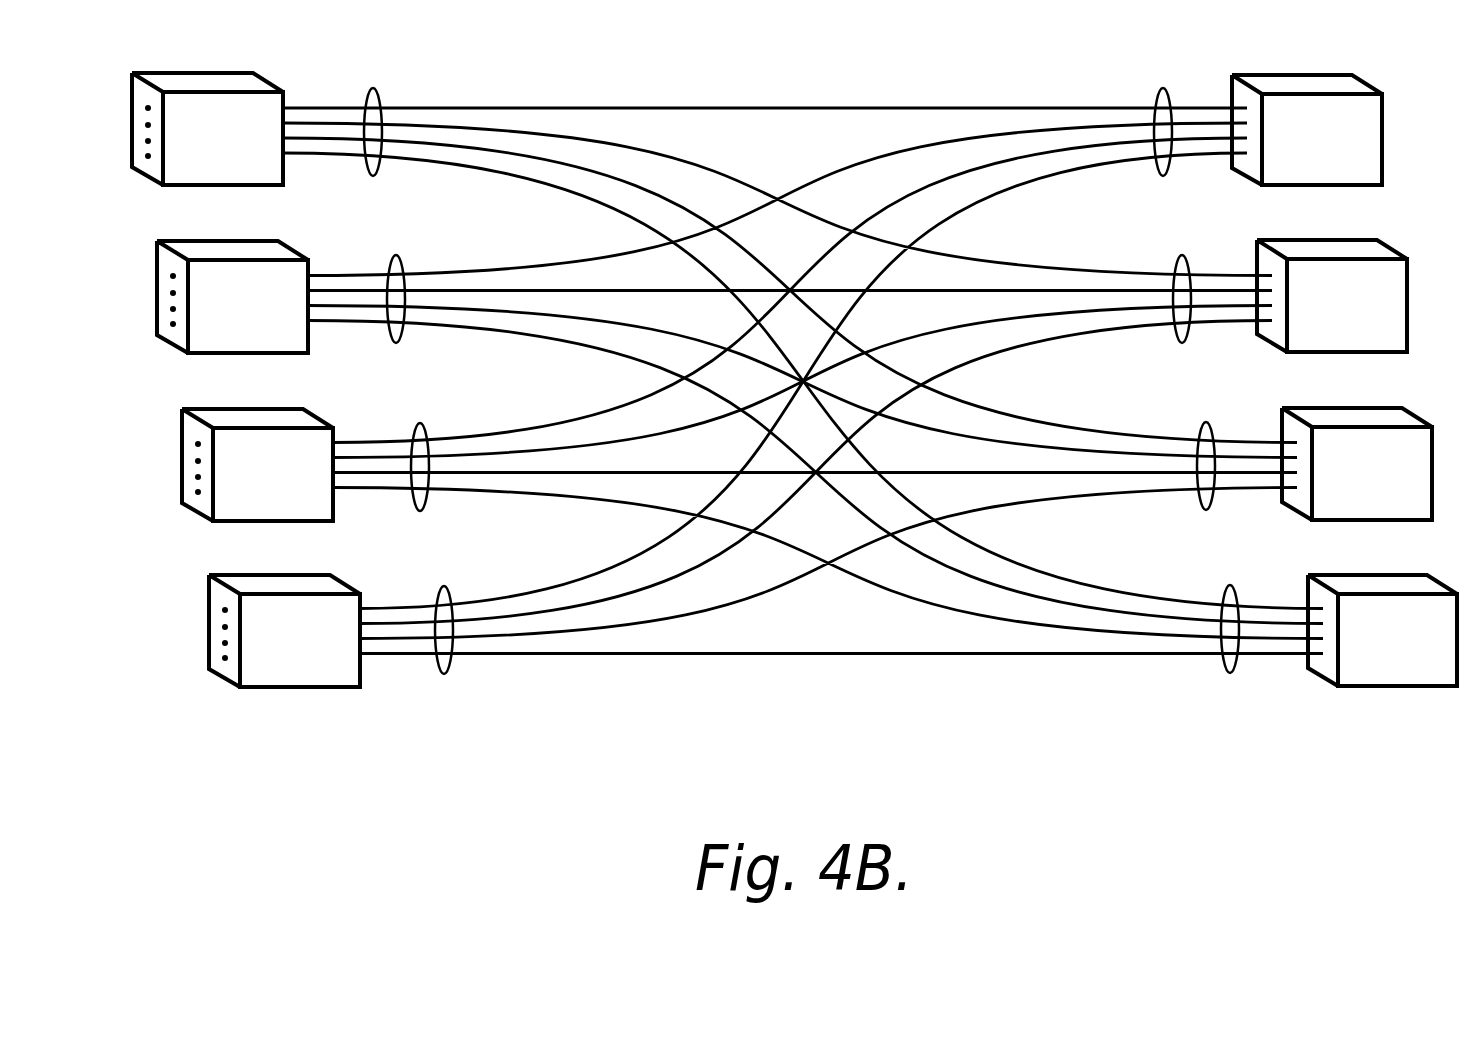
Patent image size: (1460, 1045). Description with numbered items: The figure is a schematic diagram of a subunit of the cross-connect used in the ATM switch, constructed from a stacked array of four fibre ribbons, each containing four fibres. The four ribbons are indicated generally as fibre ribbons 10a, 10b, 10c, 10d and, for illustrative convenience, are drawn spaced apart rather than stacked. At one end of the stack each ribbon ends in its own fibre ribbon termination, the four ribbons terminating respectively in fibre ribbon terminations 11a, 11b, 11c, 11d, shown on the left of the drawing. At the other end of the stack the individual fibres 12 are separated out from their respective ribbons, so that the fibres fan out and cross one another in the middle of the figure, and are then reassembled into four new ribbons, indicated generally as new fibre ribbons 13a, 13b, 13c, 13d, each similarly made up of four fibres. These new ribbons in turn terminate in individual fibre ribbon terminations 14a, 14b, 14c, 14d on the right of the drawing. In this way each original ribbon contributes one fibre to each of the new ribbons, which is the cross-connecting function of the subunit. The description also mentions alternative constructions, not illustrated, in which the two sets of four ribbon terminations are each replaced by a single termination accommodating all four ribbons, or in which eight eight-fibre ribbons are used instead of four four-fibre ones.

The fibre ribbon 10a is at (383, 93).
The fibre ribbon 10b is at (402, 263).
The fibre ribbon 10c is at (425, 432).
The fibre ribbon 10d is at (448, 595).
The fibre ribbon termination 11a is at (248, 152).
The fibre ribbon termination 11b is at (272, 320).
The fibre ribbon termination 11c is at (298, 488).
The fibre ribbon termination 11d is at (326, 654).
The individual fibres 12 is at (920, 335).
The new fibre ribbon 13a is at (1157, 102).
The new fibre ribbon 13b is at (1175, 262).
The new fibre ribbon 13c is at (1198, 430).
The new fibre ribbon 13d is at (1223, 595).
The fibre ribbon termination 14a is at (1347, 155).
The fibre ribbon termination 14b is at (1372, 320).
The fibre ribbon termination 14c is at (1397, 488).
The fibre ribbon termination 14d is at (1423, 654).